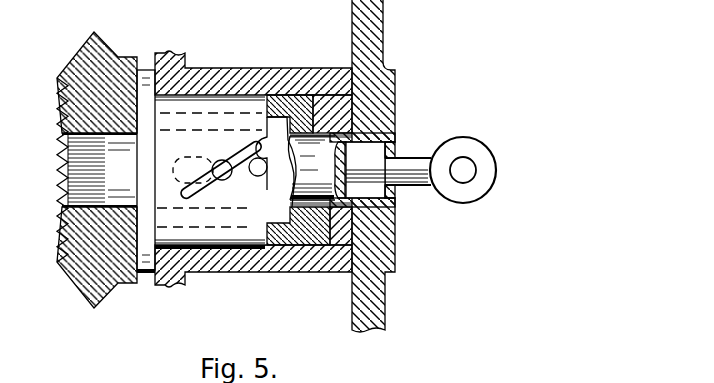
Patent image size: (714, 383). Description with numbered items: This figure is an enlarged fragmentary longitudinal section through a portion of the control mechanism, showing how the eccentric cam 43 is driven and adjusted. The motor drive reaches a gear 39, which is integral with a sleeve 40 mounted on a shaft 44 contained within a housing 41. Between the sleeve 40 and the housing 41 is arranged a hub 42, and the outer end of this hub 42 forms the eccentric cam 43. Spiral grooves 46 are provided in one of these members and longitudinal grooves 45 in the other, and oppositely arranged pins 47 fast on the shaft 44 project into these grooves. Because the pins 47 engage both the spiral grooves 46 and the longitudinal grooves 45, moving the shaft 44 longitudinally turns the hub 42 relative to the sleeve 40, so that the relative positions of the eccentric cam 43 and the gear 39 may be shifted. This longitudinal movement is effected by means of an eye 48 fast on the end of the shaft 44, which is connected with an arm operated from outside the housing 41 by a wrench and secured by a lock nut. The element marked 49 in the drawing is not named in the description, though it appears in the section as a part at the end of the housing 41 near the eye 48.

The nut 39 is at (130, 284).
The tubular casing 40 is at (288, 249).
The housing body 41 is at (315, 79).
The insert ring 42 is at (283, 105).
The mounting plate 43 is at (376, 36).
The end wall 44 is at (332, 273).
The plunger 45 is at (265, 178).
The lever 46 is at (198, 195).
The ball 47 is at (222, 182).
The key 48 is at (468, 190).
The bushing 49 is at (394, 198).